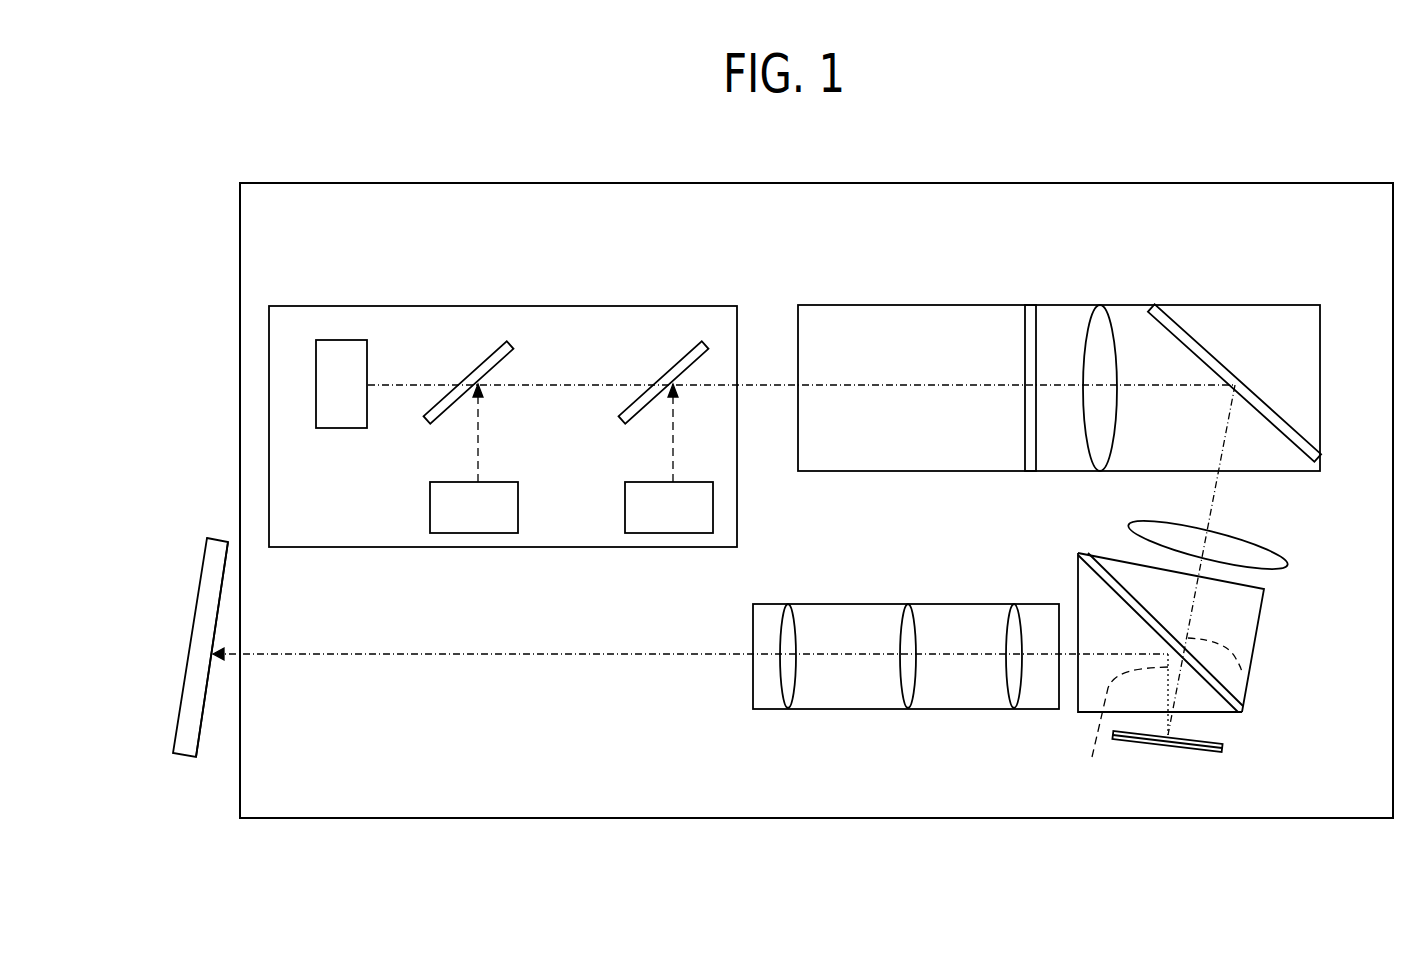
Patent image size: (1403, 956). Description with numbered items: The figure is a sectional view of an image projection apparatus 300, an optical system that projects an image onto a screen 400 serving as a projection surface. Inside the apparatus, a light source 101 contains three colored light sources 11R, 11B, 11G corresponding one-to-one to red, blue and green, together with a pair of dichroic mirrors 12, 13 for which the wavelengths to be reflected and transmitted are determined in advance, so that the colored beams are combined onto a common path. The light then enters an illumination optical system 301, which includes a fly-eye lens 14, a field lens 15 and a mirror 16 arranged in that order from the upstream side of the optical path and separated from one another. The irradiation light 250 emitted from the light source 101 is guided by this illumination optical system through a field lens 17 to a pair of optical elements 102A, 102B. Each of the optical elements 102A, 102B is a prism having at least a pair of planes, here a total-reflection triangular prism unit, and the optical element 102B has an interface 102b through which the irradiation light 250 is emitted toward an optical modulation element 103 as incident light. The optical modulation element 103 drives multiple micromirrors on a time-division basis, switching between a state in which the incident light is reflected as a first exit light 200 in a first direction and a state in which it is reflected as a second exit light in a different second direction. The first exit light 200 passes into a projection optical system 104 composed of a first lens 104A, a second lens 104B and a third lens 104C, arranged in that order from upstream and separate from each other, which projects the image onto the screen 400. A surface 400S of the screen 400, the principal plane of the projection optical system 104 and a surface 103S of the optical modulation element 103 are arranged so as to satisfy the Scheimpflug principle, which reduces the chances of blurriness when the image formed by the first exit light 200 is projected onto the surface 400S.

The image projection apparatus 300 is at (280, 183).
The illumination optical system 301 is at (1273, 317).
The light source 101 is at (396, 517).
The colored light source 11R is at (348, 357).
The colored light source 11G is at (652, 517).
The colored light source 11B is at (478, 517).
The dichroic mirror 12 is at (483, 347).
The dichroic mirror 13 is at (680, 347).
The fly-eye lens 14 is at (1029, 473).
The field lens 15 is at (1100, 317).
The mirror 16 is at (1280, 418).
The field lens 17 is at (1290, 562).
The optical element 102A is at (1243, 620).
The optical element 102B is at (1078, 688).
The interface 102b is at (1220, 716).
The irradiation light 250 is at (1243, 679).
The first exit light 200 is at (1118, 729).
The optical modulation element 103 is at (1140, 747).
The surface of the optical modulation element 103S is at (1203, 737).
The projection optical system 104 is at (836, 703).
The first lens 104A is at (1007, 622).
The second lens 104B is at (903, 622).
The third lens 104C is at (780, 622).
The screen 400 is at (222, 539).
The surface of the screen 400S is at (197, 749).